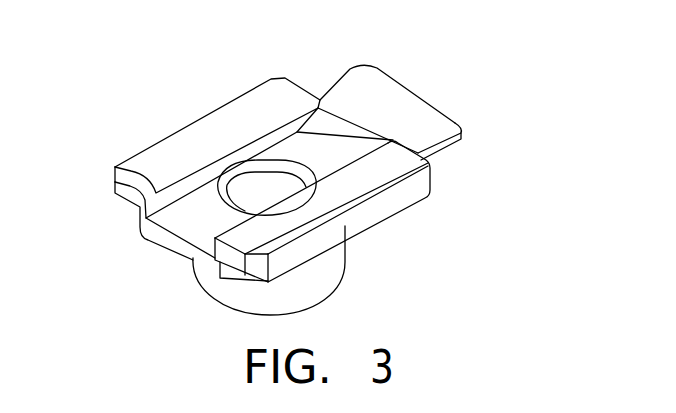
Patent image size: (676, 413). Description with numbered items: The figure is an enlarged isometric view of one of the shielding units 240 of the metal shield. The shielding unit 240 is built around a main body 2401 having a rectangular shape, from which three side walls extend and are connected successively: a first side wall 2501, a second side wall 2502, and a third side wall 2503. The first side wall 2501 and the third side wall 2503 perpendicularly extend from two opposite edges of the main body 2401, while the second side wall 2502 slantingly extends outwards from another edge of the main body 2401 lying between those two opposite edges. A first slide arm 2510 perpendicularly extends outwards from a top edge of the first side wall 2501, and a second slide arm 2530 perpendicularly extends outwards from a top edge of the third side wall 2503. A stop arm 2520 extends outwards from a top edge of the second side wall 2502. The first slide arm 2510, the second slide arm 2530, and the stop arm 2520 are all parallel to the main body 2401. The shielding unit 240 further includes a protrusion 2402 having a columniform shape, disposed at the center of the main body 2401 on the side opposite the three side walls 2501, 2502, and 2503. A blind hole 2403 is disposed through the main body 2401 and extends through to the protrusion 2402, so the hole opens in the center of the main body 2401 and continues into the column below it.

The shielding unit 240 is at (310, 43).
The main body 2401 is at (214, 249).
The protrusion 2402 is at (242, 287).
The blind hole 2403 is at (258, 188).
The first side wall 2501 is at (115, 167).
The second side wall 2502 is at (334, 139).
The third side wall 2503 is at (214, 253).
The first slide arm 2510 is at (165, 164).
The stop arm 2520 is at (415, 122).
The second slide arm 2530 is at (338, 199).